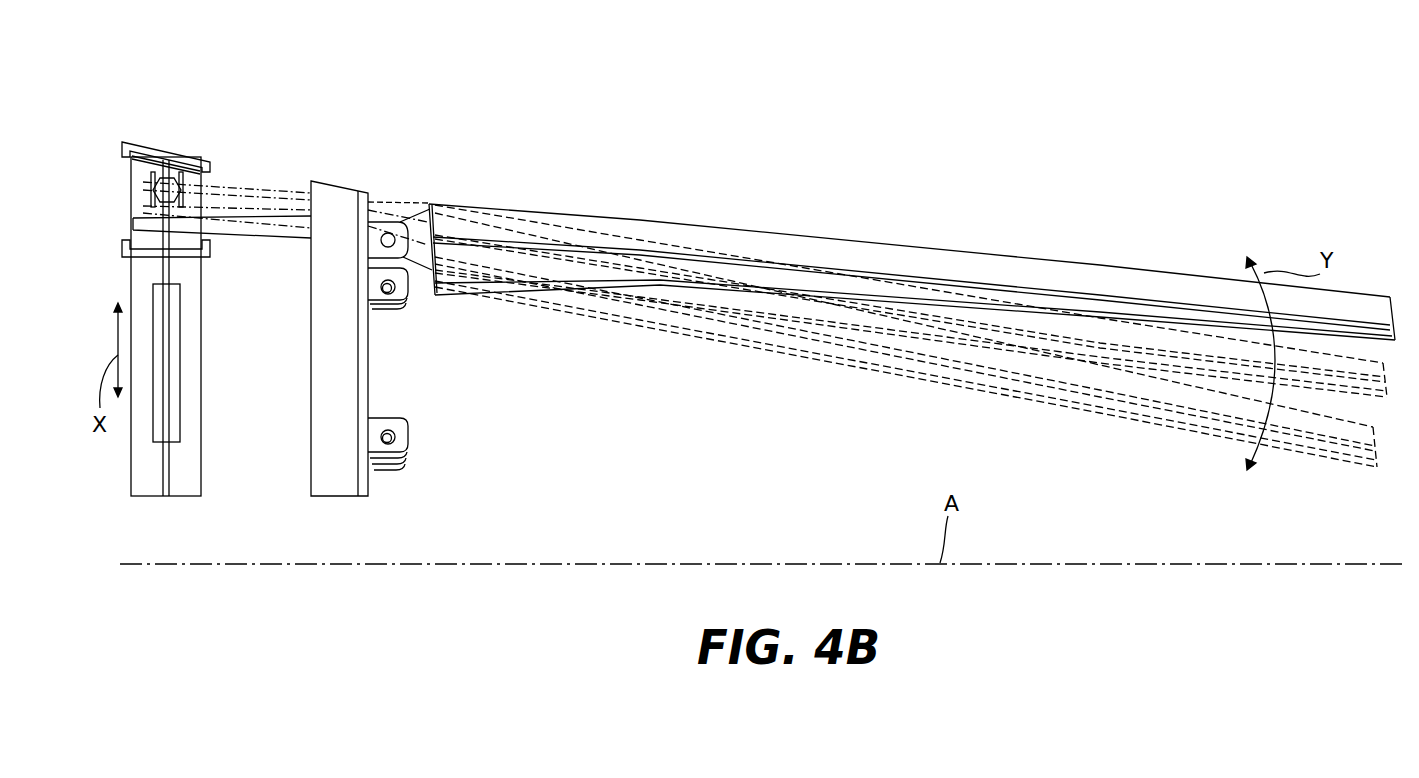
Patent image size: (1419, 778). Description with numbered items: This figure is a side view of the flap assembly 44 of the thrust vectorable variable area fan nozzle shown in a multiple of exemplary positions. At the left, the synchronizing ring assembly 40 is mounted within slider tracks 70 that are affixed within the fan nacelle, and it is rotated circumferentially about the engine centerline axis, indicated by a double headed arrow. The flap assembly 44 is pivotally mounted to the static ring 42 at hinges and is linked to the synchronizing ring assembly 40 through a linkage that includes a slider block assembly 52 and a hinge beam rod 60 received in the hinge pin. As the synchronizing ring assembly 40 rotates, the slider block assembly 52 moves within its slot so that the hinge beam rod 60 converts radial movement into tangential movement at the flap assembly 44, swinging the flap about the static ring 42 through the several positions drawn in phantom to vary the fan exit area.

The synchronizing ring assembly 40 is at (186, 490).
The static ring 42 is at (347, 490).
The flap assembly 44 is at (1135, 244).
The slider block assembly 52 is at (186, 180).
The hinge beam rod 60 is at (262, 232).
The slider tracks 70 is at (180, 157).